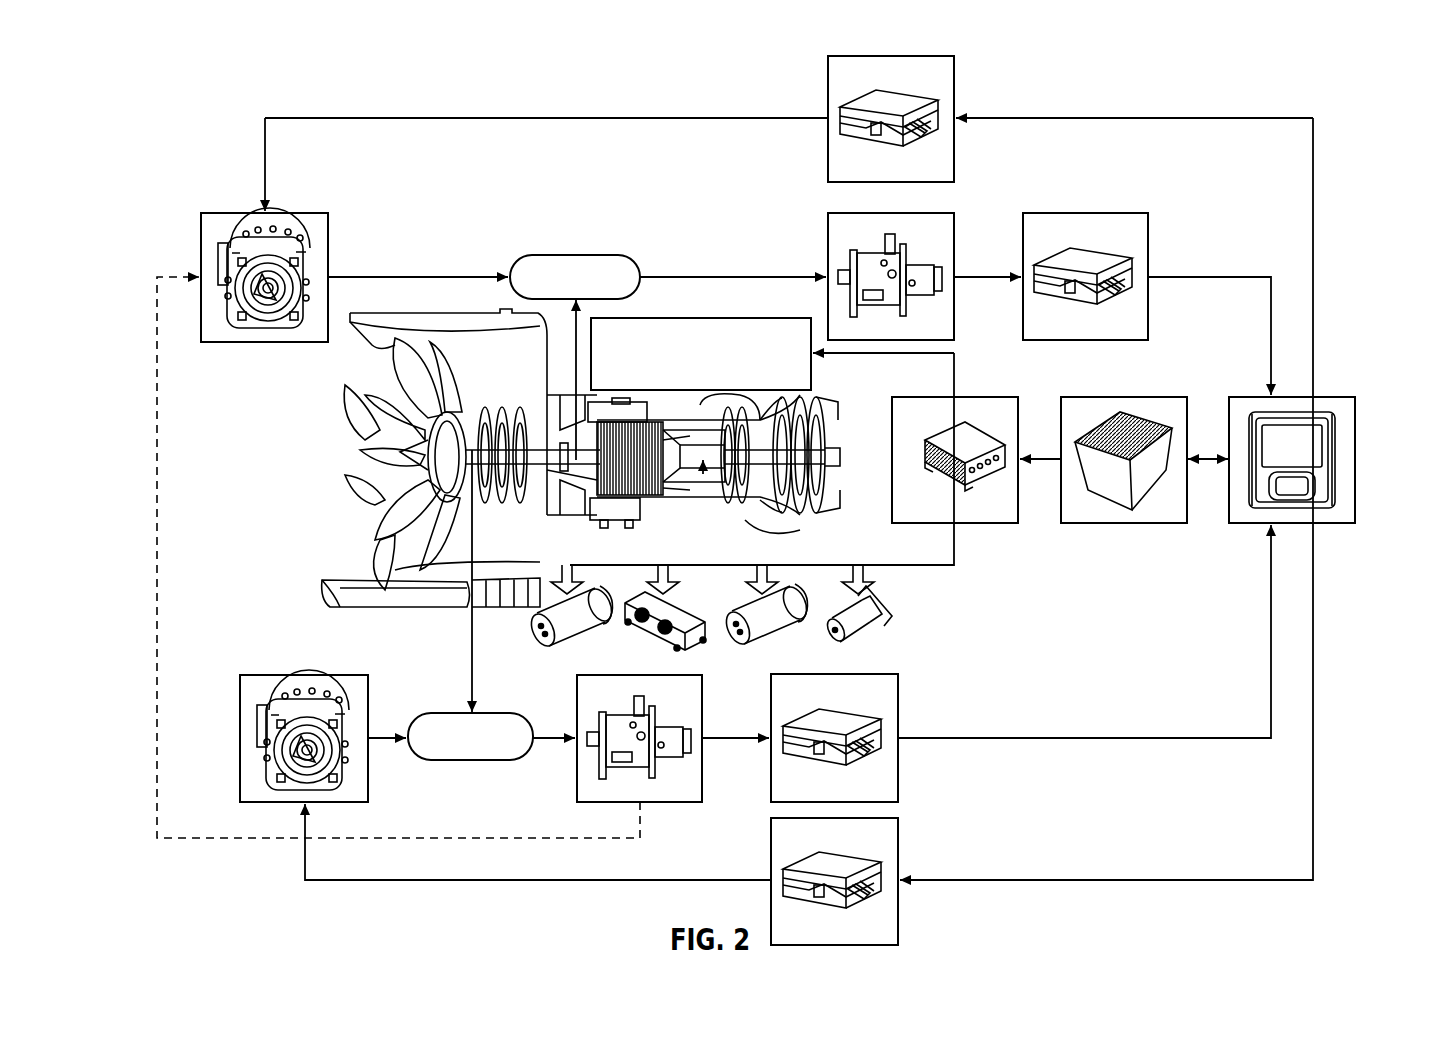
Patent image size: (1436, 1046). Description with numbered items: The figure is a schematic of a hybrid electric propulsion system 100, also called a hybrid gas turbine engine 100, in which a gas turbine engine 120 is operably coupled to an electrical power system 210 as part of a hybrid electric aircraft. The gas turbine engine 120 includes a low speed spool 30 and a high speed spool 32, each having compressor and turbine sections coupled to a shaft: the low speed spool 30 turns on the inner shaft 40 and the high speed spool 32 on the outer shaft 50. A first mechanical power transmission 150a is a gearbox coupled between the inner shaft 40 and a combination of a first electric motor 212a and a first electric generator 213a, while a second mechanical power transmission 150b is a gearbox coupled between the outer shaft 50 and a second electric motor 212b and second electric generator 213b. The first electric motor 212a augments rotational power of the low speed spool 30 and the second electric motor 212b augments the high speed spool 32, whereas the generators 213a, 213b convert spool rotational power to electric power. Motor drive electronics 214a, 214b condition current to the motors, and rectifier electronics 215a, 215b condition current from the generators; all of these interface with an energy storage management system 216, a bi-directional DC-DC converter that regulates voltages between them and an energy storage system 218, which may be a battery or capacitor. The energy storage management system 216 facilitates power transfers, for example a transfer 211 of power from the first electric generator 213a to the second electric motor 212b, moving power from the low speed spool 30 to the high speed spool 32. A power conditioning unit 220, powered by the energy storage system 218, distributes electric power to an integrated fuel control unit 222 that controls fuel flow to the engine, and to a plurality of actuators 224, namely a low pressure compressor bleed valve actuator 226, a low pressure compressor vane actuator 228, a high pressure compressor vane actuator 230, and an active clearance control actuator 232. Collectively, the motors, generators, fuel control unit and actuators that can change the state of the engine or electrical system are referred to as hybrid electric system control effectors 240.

The hybrid electric propulsion system 100 is at (178, 106).
The gas turbine engine 120 is at (305, 385).
The low speed spool 30 is at (378, 424).
The high speed spool 32 is at (682, 500).
The inner shaft 40 is at (375, 502).
The outer shaft 50 is at (395, 378).
The mechanical power transmission 150a is at (445, 712).
The mechanical power transmission 150b is at (580, 254).
The electrical power system 210 is at (722, 316).
The power transfer 211 is at (157, 425).
The first electric motor 212a is at (300, 675).
The second electric motor 212b is at (200, 240).
The first electric generator 213a is at (577, 780).
The second electric generator 213b is at (827, 250).
The motor drive electronics 214a is at (898, 848).
The motor drive electronics 214b is at (827, 92).
The rectifier electronics 215a is at (898, 705).
The rectifier electronics 215b is at (1090, 212).
The energy storage management system 216 is at (1357, 462).
The energy storage system 218 is at (1125, 396).
The power conditioning unit 220 is at (921, 396).
The integrated fuel control unit 222 is at (712, 318).
The actuators 224 is at (985, 580).
The low pressure compressor bleed valve actuator 226 is at (553, 650).
The low pressure compressor vane actuator 228 is at (656, 640).
The high pressure compressor vane actuator 230 is at (748, 650).
The active clearance control actuator 232 is at (895, 625).
The hybrid electric system control effectors 240 is at (1170, 362).